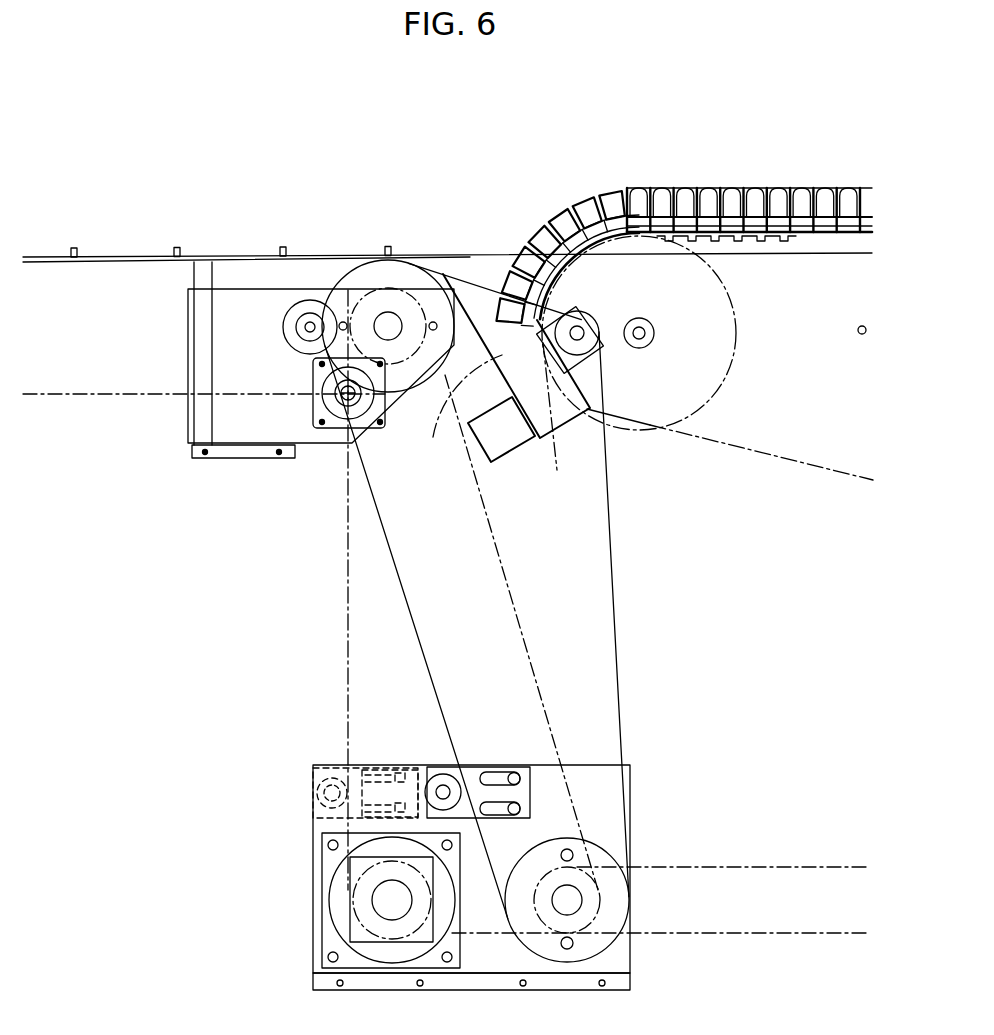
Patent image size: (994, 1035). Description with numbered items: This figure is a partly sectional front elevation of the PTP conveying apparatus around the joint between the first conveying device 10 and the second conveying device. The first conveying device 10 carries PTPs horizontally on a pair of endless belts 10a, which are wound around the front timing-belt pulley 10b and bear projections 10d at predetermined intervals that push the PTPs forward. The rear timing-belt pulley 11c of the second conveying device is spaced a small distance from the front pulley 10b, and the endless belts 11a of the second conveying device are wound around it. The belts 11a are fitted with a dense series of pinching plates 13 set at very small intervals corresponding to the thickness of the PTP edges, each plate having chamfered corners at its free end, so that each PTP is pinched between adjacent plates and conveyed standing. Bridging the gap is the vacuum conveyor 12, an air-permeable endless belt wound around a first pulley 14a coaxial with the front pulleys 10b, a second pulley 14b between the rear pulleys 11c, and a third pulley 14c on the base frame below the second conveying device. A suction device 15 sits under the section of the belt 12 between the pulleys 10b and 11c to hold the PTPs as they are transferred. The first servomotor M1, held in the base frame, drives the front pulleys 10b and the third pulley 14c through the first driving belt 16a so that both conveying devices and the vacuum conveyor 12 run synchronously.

The first conveying device 10 is at (258, 236).
The endless belts 10a is at (116, 391).
The timing-belt pulley 10b is at (353, 266).
The projections 10d is at (179, 247).
The endless belts 11a is at (784, 461).
The timing-belt pulley 11c is at (728, 292).
The vacuum conveyor 12 is at (480, 275).
The pinching plates 13 is at (636, 197).
The first pulley 14a is at (416, 262).
The second pulley 14b is at (554, 352).
The third pulley 14c is at (603, 856).
The suction device 15 is at (466, 426).
The first driving belt 16a is at (343, 604).
The first servomotor M1 is at (333, 893).